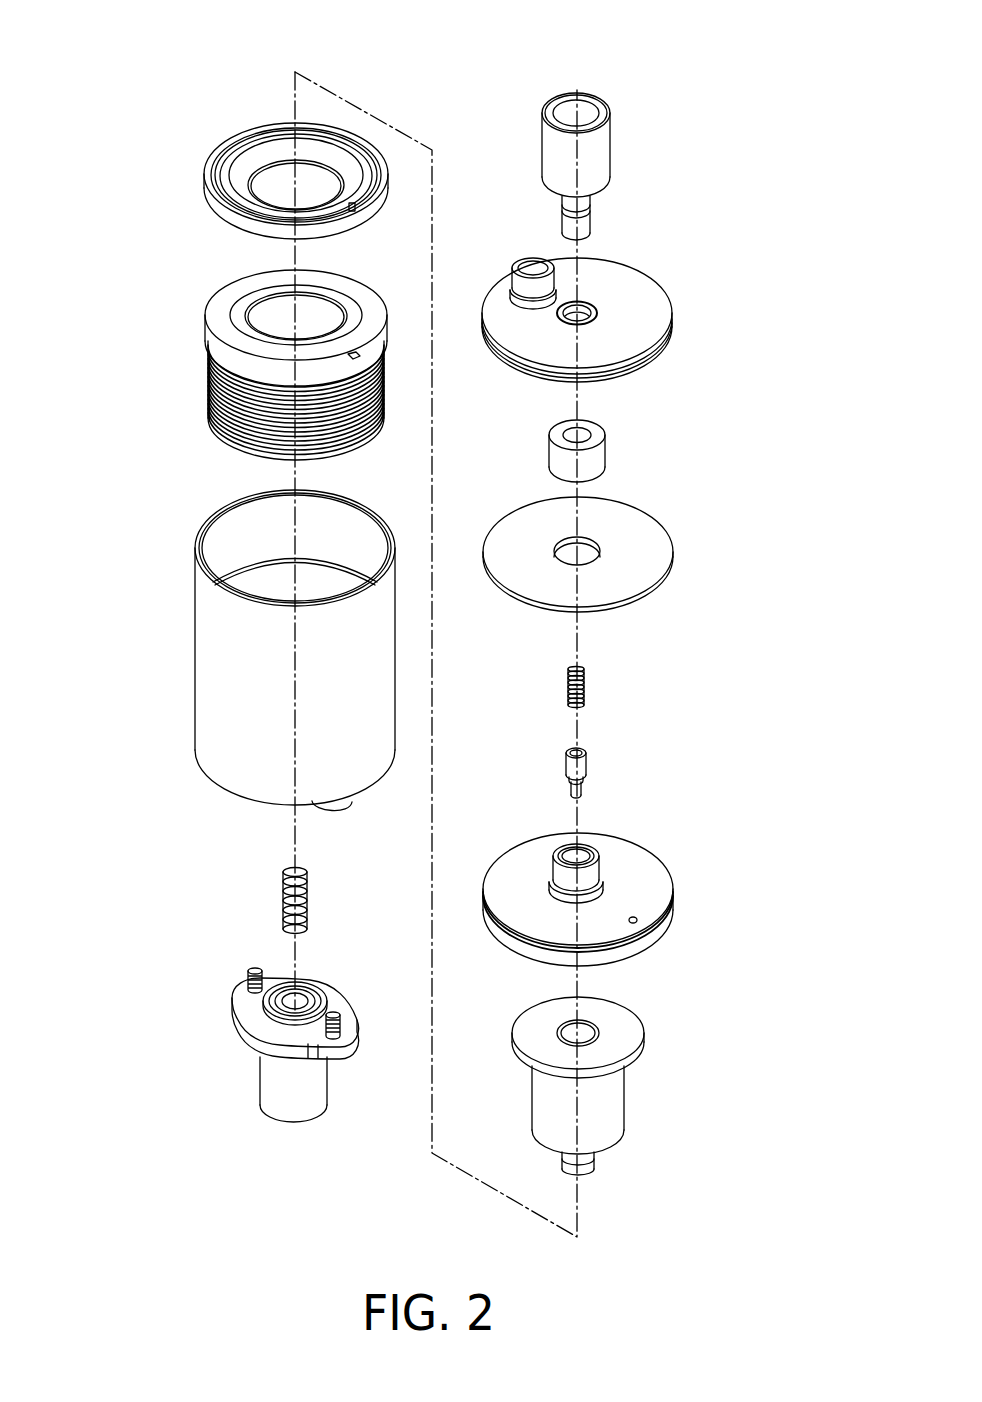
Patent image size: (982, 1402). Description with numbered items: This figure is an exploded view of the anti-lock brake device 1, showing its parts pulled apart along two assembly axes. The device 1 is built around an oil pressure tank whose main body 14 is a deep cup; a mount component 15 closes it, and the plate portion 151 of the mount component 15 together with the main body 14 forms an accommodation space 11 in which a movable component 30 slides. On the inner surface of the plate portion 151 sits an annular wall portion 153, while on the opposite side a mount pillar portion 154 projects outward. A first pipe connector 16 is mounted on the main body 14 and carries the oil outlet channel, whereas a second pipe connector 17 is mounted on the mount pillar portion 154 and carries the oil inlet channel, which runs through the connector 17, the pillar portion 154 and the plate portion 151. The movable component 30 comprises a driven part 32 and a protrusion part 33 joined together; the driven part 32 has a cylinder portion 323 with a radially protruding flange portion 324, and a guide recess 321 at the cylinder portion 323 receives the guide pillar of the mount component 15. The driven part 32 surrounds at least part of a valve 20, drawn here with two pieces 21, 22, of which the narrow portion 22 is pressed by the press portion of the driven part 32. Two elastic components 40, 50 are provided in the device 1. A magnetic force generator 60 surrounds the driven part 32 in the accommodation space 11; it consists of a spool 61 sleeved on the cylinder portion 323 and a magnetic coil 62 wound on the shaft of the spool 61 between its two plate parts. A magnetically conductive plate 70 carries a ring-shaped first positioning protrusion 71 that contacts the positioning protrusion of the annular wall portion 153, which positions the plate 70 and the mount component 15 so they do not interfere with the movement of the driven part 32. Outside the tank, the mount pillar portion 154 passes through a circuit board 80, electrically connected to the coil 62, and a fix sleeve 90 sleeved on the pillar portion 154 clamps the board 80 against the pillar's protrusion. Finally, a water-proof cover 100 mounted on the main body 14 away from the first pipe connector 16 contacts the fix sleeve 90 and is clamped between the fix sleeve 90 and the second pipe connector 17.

The anti-lock brake device 1 is at (97, 29).
The accommodation space 11 is at (266, 578).
The main body 14 is at (218, 676).
The mount component 15 is at (663, 853).
The plate portion 151 is at (651, 891).
The annular wall portion 153 is at (660, 933).
The mount pillar portion 154 is at (600, 866).
The first pipe connector 16 is at (265, 1078).
The second pipe connector 17 is at (597, 150).
The valve 20 is at (677, 700).
The sleeve 21 is at (590, 766).
The narrow portion 22 is at (587, 790).
The movable component 30 is at (645, 1013).
The driven part 32 is at (720, 1013).
The guide recess 321 is at (583, 1018).
The cylinder portion 323 is at (616, 1119).
The flange portion 324 is at (623, 1037).
The protrusion part 33 is at (593, 1169).
The elastic component 40 is at (587, 685).
The elastic component 50 is at (281, 895).
The magnetic force generator 60 is at (150, 262).
The spool 61 is at (224, 303).
The magnetic coil 62 is at (210, 377).
The magnetically conductive plate 70 is at (208, 170).
The first positioning protrusion 71 is at (224, 156).
The circuit board 80 is at (640, 548).
The fix sleeve 90 is at (597, 452).
The water-proof cover 100 is at (640, 310).